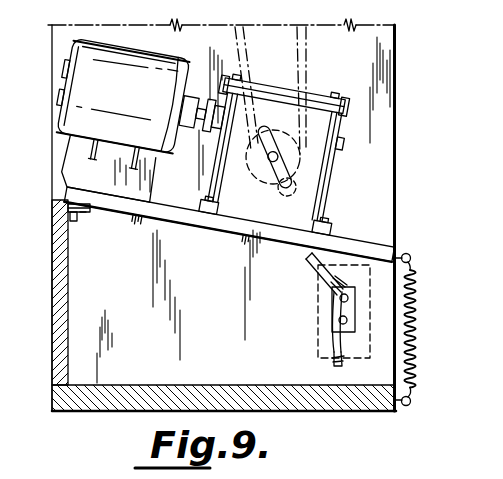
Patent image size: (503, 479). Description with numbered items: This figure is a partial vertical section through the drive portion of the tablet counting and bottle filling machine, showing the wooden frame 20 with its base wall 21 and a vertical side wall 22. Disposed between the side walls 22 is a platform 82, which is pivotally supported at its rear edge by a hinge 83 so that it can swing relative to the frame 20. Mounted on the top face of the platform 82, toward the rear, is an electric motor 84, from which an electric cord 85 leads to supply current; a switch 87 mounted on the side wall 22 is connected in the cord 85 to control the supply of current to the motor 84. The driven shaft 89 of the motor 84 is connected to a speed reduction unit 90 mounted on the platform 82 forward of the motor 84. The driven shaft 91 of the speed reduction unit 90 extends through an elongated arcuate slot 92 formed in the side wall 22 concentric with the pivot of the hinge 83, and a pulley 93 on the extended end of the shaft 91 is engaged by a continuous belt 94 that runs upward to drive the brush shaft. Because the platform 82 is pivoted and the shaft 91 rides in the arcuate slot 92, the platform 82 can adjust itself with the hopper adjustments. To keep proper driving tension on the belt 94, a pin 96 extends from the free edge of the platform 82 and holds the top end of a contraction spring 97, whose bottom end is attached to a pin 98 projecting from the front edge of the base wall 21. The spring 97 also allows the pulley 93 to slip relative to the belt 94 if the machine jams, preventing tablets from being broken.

The frame 20 is at (45, 414).
The base wall 21 is at (284, 391).
The side wall 22 is at (394, 159).
The platform 82 is at (170, 213).
The hinge 83 is at (72, 223).
The electric motor 84 is at (71, 118).
The electric cord 85 is at (309, 261).
The switch 87 is at (337, 313).
The driven shaft 89 is at (176, 107).
The speed reduction unit 90 is at (325, 181).
The driven shaft 91 is at (268, 176).
The elongated arcuate slot 92 is at (296, 190).
The pulley 93 is at (294, 153).
The continuous belt 94 is at (302, 70).
The pin 96 is at (411, 258).
The contraction spring 97 is at (418, 316).
The pin 98 is at (413, 399).